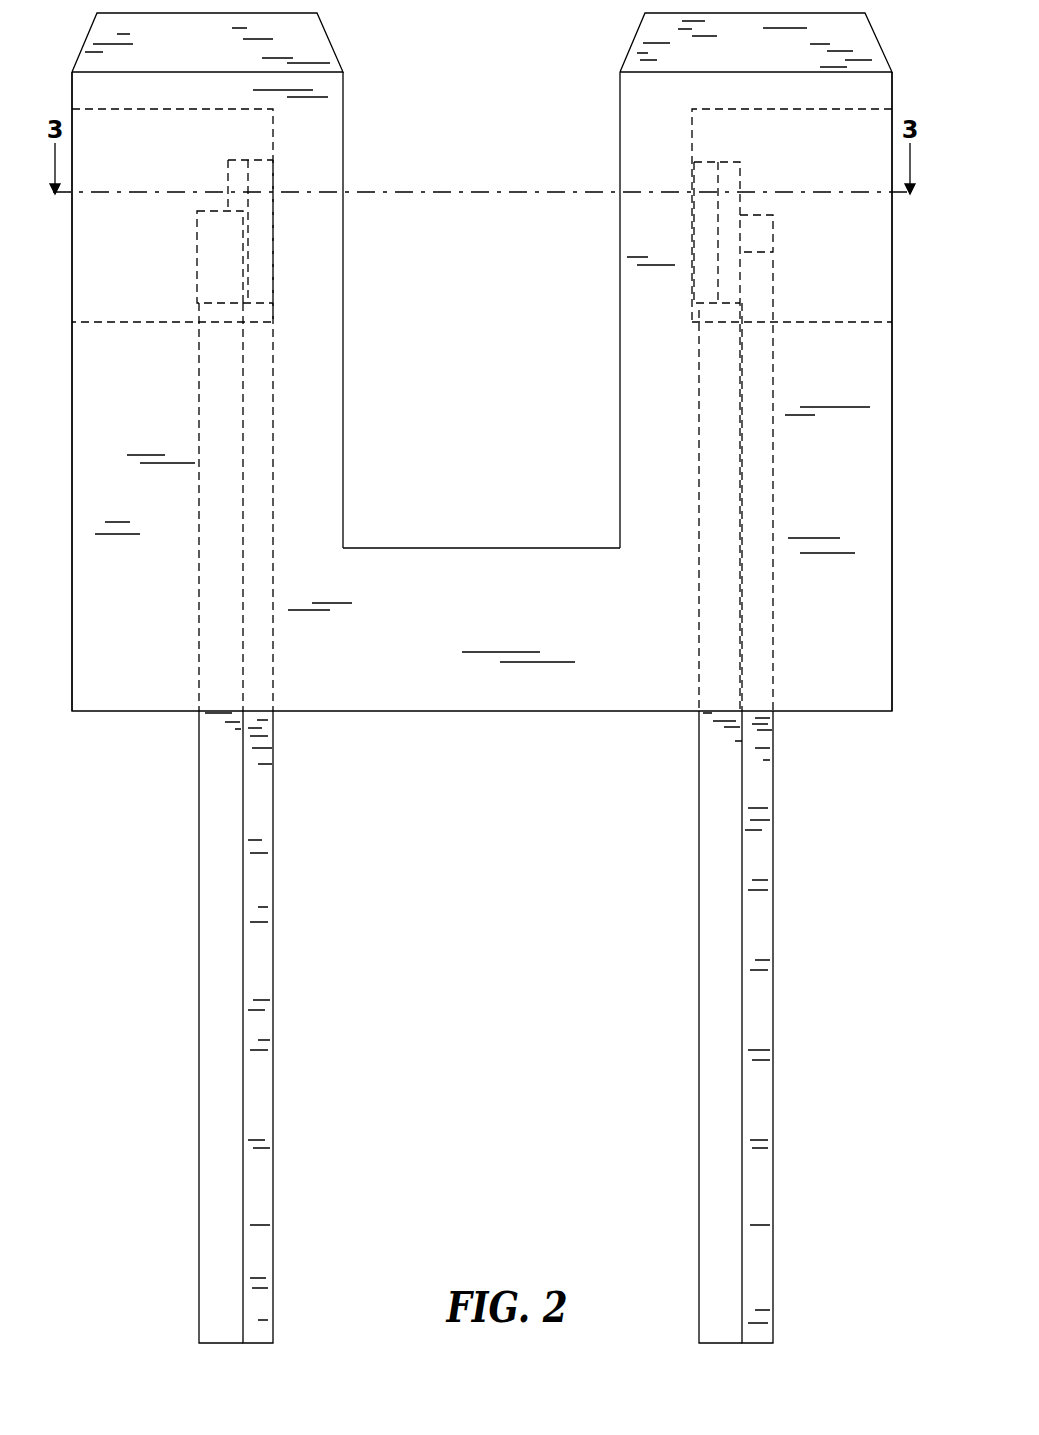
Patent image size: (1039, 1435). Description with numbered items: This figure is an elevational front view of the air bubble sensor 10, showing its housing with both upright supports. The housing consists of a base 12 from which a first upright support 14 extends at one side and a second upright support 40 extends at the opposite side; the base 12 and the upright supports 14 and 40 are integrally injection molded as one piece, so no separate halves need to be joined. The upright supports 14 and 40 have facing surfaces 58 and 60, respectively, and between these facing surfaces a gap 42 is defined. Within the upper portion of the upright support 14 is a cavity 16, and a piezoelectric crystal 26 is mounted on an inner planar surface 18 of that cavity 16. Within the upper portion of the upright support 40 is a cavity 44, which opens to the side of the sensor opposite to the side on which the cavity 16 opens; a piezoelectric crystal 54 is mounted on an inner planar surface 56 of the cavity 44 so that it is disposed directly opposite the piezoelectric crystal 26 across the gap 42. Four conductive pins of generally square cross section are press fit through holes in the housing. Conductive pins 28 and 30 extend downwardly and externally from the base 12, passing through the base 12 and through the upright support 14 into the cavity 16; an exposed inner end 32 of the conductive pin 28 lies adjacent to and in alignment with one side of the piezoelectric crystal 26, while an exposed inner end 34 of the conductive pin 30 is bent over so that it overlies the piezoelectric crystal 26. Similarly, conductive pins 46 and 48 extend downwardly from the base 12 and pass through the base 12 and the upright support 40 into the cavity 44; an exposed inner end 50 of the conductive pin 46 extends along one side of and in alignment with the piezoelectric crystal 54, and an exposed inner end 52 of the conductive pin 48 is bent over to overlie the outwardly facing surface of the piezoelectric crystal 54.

The air bubble sensor 10 is at (128, 800).
The base 12 is at (430, 711).
The upright support 14 is at (72, 437).
The cavity 16 is at (72, 222).
The inner planar surface 18 is at (275, 128).
The piezoelectric crystal 26 is at (274, 292).
The conductive pin 28 is at (273, 853).
The conductive pin 30 is at (199, 905).
The exposed inner end 32 is at (275, 162).
The exposed inner end 34 is at (196, 278).
The upright support 40 is at (892, 475).
The gap 42 is at (464, 404).
The cavity 44 is at (892, 232).
The conductive pin 46 is at (699, 853).
The conductive pin 48 is at (773, 858).
The exposed inner end 50 is at (692, 322).
The exposed inner end 52 is at (769, 280).
The piezoelectric crystal 54 is at (692, 246).
The inner planar surface 56 is at (692, 138).
The facing surface 58 is at (343, 248).
The facing surface 60 is at (620, 262).